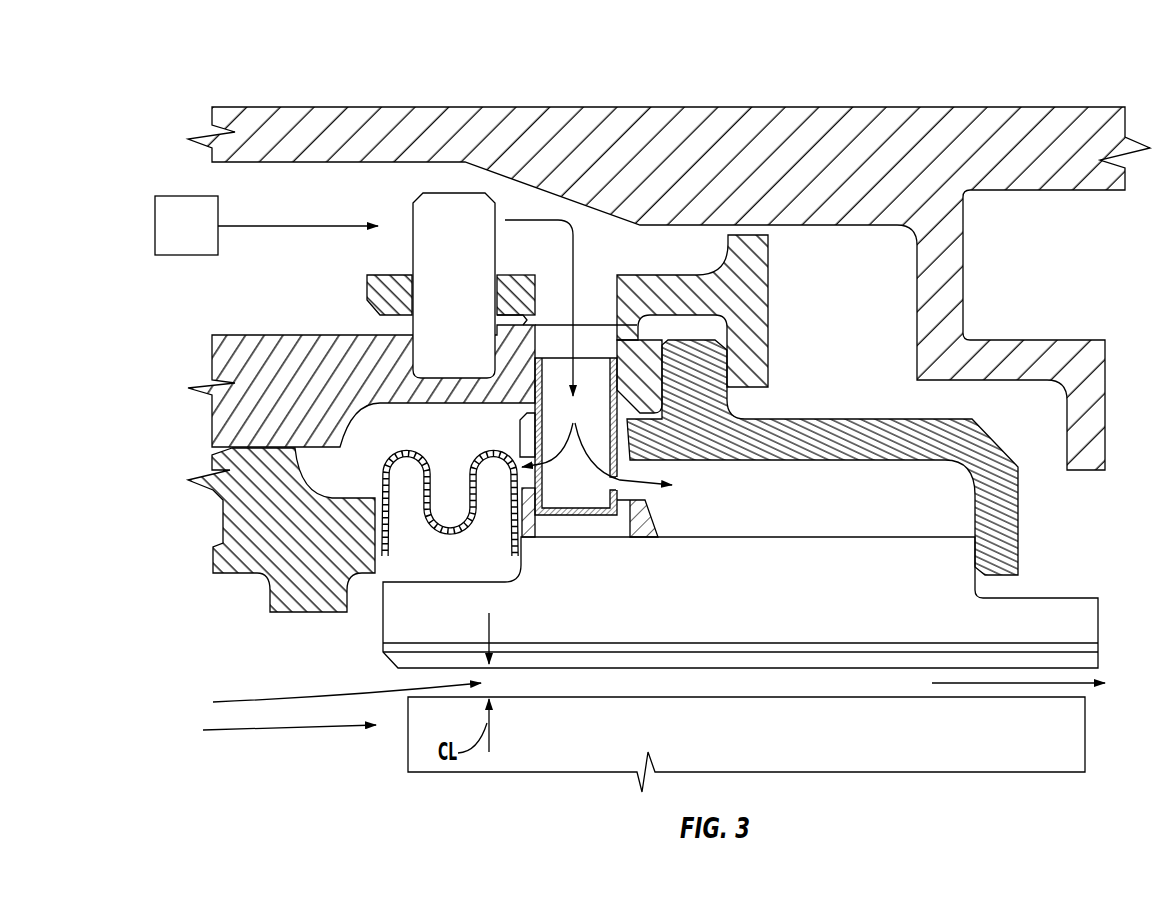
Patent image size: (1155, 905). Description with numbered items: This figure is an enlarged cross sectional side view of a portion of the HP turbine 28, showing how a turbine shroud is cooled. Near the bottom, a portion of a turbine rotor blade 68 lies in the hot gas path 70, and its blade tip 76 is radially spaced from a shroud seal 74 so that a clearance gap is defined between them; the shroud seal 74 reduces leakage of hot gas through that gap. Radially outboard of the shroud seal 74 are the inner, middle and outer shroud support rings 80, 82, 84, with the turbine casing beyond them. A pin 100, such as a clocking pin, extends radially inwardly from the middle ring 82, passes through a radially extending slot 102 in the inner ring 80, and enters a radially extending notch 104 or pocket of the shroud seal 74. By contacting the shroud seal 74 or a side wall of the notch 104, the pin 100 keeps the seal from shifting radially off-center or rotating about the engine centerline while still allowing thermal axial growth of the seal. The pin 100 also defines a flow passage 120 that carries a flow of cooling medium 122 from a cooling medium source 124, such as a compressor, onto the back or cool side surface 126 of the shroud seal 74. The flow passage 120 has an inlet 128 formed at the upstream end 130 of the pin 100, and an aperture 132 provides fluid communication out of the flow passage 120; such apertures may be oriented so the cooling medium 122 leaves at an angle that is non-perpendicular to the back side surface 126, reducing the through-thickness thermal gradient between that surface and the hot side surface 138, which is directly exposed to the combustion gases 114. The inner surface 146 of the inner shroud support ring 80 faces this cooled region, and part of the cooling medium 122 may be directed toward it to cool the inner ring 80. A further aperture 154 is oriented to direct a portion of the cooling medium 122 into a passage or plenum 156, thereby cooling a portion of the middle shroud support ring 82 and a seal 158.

The HP turbine 28 is at (874, 90).
The turbine rotor blade 68 is at (746, 744).
The hot gas path 70 is at (255, 732).
The shroud seal 74 is at (766, 585).
The blade tip 76 is at (523, 699).
The inner shroud support ring 80 is at (1018, 513).
The middle shroud support ring 82 is at (450, 407).
The outer shroud support ring 84 is at (748, 340).
The pin 100 is at (533, 432).
The radially extending slot 102 is at (848, 457).
The radially extending notch 104 is at (553, 522).
The combustion gases 114 is at (300, 697).
The flow passage 120 is at (607, 431).
The cooling medium 122 is at (302, 228).
The cooling medium source 124 is at (202, 238).
The back side surface 126 is at (822, 535).
The inlet 128 is at (596, 360).
The upstream end 130 is at (546, 354).
The aperture 132 is at (617, 490).
The hot side surface 138 is at (790, 670).
The inner surface 146 is at (848, 457).
The aperture 154 is at (517, 480).
The plenum 156 is at (451, 510).
The seal 158 is at (382, 470).